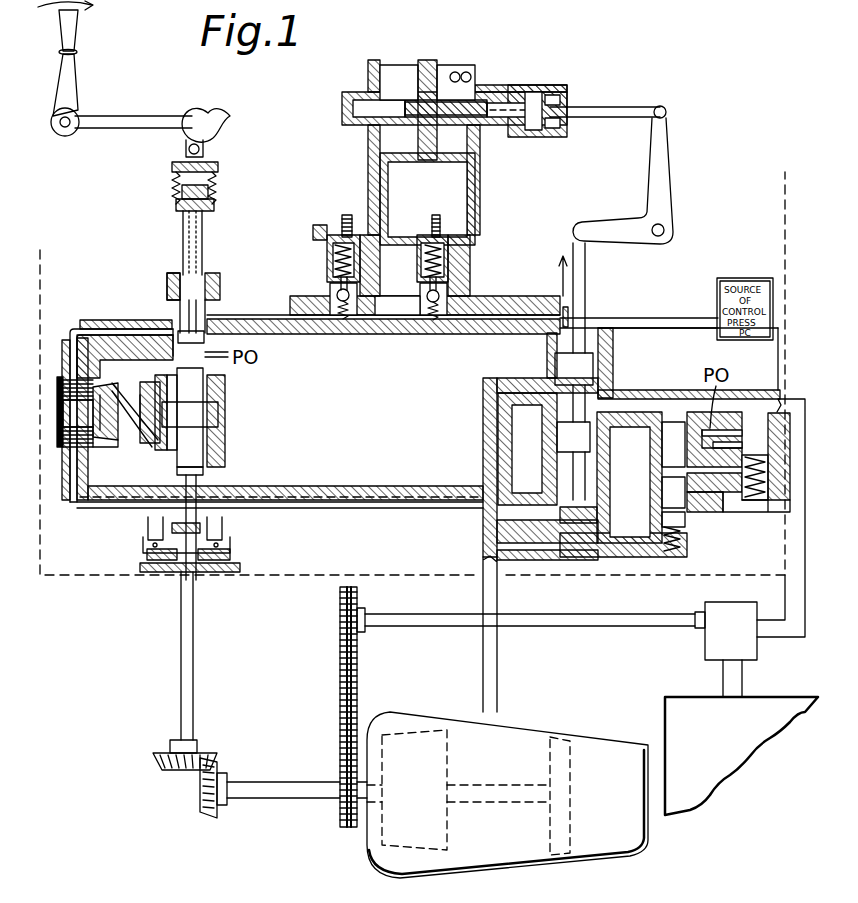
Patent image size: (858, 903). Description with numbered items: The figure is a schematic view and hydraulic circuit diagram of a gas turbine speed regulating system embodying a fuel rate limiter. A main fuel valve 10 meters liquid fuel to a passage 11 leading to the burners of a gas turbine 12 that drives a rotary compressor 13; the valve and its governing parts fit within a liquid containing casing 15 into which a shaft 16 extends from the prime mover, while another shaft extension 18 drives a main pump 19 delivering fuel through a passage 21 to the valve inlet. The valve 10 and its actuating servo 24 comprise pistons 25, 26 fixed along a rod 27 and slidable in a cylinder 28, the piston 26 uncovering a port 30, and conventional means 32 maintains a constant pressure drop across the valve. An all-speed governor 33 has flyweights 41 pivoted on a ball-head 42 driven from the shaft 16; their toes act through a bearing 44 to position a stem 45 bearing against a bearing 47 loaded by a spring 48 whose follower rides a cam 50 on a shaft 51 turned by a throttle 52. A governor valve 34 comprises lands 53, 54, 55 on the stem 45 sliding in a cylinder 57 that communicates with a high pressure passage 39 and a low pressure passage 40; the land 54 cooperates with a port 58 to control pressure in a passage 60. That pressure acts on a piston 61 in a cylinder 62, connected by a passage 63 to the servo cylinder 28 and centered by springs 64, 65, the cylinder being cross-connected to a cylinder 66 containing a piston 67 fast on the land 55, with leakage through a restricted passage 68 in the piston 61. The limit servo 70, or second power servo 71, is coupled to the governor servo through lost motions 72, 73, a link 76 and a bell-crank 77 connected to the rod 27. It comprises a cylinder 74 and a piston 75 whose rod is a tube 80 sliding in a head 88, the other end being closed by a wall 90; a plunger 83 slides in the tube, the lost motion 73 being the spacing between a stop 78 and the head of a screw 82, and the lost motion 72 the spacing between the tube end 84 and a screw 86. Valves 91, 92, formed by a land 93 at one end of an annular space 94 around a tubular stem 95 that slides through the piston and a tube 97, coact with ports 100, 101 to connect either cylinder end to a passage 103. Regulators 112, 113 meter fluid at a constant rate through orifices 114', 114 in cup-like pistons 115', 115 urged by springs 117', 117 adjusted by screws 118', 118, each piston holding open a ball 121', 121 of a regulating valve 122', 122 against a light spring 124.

The main fuel valve 10 is at (543, 360).
The passage 11 is at (490, 378).
The gas turbine 12 is at (551, 727).
The rotary compressor 13 is at (413, 735).
The liquid containing casing 15 is at (152, 572).
The shaft 16 is at (190, 705).
The turbine shaft extension 18 is at (590, 628).
The main pump 19 is at (758, 654).
The passage 21 is at (805, 605).
The actuating servo 24 is at (590, 462).
The servo piston 25 is at (605, 440).
The piston 26 is at (593, 372).
The rod 27 is at (590, 302).
The cylinder 28 is at (596, 507).
The port 30 is at (548, 393).
The constant pressure drop means 32 is at (706, 512).
The all-speed governor 33 is at (268, 528).
The governor valve 34 is at (166, 328).
The high pressure passage 39 is at (257, 315).
The low pressure passage 40 is at (232, 364).
The flyweights 41 is at (148, 530).
The ball-head 42 is at (148, 555).
The bearing 44 is at (197, 523).
The stem 45 is at (186, 490).
The bearing 47 is at (214, 207).
The compression spring 48 is at (214, 180).
The cam 50 is at (222, 131).
The shaft 51 is at (148, 128).
The throttle 52 is at (70, 97).
The land 53 is at (212, 278).
The land 54 is at (206, 338).
The land 55 is at (208, 380).
The cylinder 57 is at (178, 278).
The port 58 is at (180, 338).
The passage 60 is at (90, 329).
The piston 61 is at (68, 410).
The cylinder 62 is at (60, 386).
The passage 63 is at (95, 508).
The compression spring 64 is at (58, 378).
The compression spring 65 is at (62, 444).
The cylinder 66 is at (222, 440).
The piston 67 is at (212, 414).
The restricted passage 68 is at (60, 432).
The limit servo 70 is at (541, 74).
The second power servo 71 is at (454, 52).
The lost motion 72 is at (505, 137).
The lost motion 73 is at (545, 95).
The cylinder 74 is at (400, 65).
The piston 75 is at (428, 60).
The link 76 is at (628, 107).
The bell-crank 77 is at (668, 197).
The stop 78 is at (562, 126).
The cylindrical tube 80 is at (550, 85).
The screw 82 is at (560, 102).
The plunger 83 is at (514, 85).
The tube end 84 is at (493, 96).
The screw 86 is at (520, 137).
The head 88 is at (480, 58).
The wall 90 is at (372, 66).
The valve 91 is at (444, 179).
The valve 92 is at (427, 199).
The land 93 is at (448, 140).
The annular space 94 is at (352, 110).
The tubular stem 95 is at (492, 138).
The tube 97 is at (360, 92).
The ports 100 is at (456, 82).
The ports 101 is at (410, 125).
The passage 103 is at (399, 82).
The regulator 112 is at (319, 258).
The regulator 113 is at (470, 276).
The orifice 114 is at (404, 288).
The orifice 114' is at (316, 276).
The cup-like piston 115 is at (472, 257).
The cup-like piston 115' is at (374, 262).
The spring 117 is at (419, 221).
The spring 117' is at (311, 227).
The screw 118 is at (478, 211).
The screw 118' is at (324, 214).
The ball 121 is at (411, 307).
The ball 121' is at (323, 327).
The regulating valve 122 is at (471, 297).
The regulating valve 122' is at (316, 298).
The light spring 124 is at (432, 322).